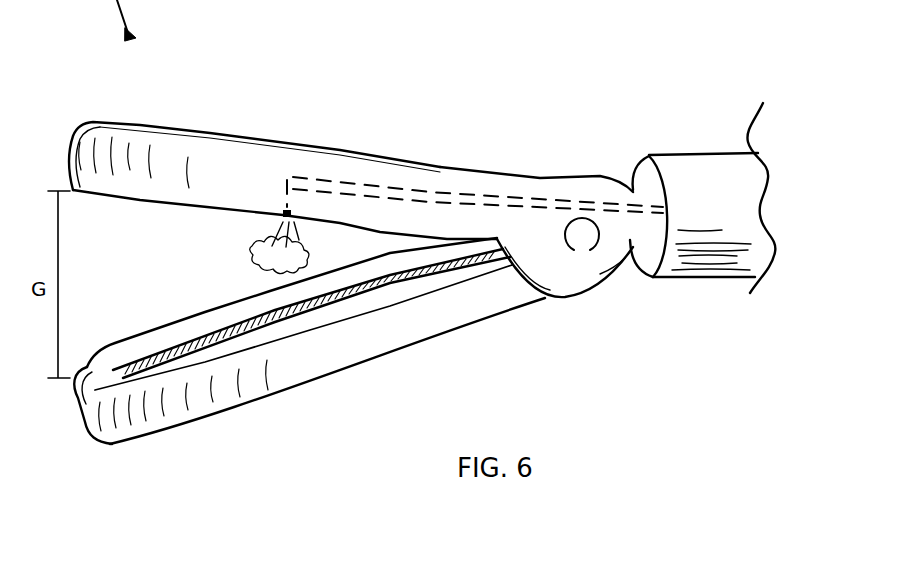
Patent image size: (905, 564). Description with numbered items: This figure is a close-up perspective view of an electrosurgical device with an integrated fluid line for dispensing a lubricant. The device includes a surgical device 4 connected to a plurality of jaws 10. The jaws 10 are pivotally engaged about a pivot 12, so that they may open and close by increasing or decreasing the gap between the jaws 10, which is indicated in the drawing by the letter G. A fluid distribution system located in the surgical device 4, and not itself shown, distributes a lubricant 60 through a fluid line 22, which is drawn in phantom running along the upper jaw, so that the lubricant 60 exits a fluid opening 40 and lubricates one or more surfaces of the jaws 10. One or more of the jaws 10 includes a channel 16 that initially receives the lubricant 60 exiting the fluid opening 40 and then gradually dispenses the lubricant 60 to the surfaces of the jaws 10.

The surgical device 4 is at (695, 175).
The jaws 10 is at (148, 157).
The pivot 12 is at (584, 238).
The channel 16 is at (115, 377).
The fluid line 22 is at (437, 190).
The fluid opening 40 is at (283, 217).
The lubricant 60 is at (268, 258).